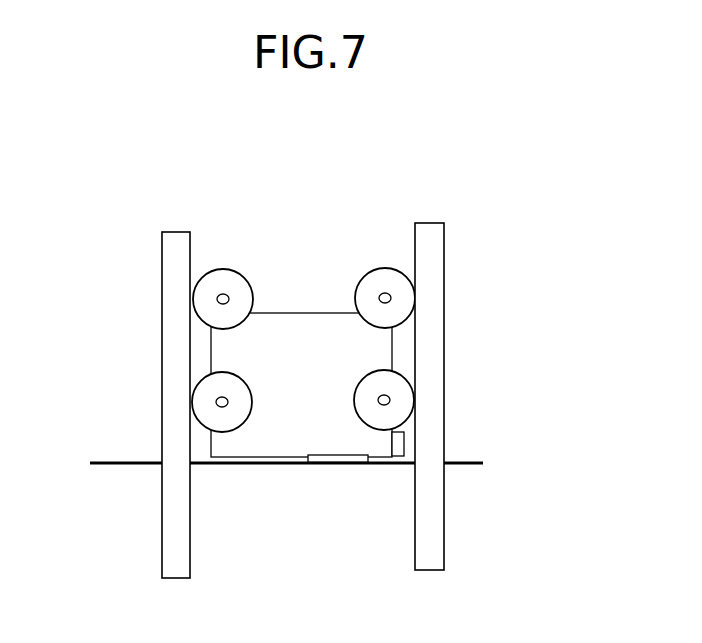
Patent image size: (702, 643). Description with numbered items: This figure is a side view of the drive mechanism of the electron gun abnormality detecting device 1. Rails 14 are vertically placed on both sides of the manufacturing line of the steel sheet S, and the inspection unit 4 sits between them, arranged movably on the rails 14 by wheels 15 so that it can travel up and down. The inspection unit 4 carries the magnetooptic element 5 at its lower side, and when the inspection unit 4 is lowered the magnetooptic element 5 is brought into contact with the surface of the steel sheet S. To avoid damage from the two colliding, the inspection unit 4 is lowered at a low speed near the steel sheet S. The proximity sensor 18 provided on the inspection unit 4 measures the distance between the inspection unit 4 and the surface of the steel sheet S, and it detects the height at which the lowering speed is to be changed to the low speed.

The electron gun abnormality detecting device 1 is at (114, 180).
The inspection unit 4 is at (282, 306).
The magnetooptic element 5 is at (325, 464).
The rails 14 is at (162, 264).
The wheels 15 is at (222, 268).
The proximity sensor 18 is at (398, 458).
The steel sheet S is at (480, 468).